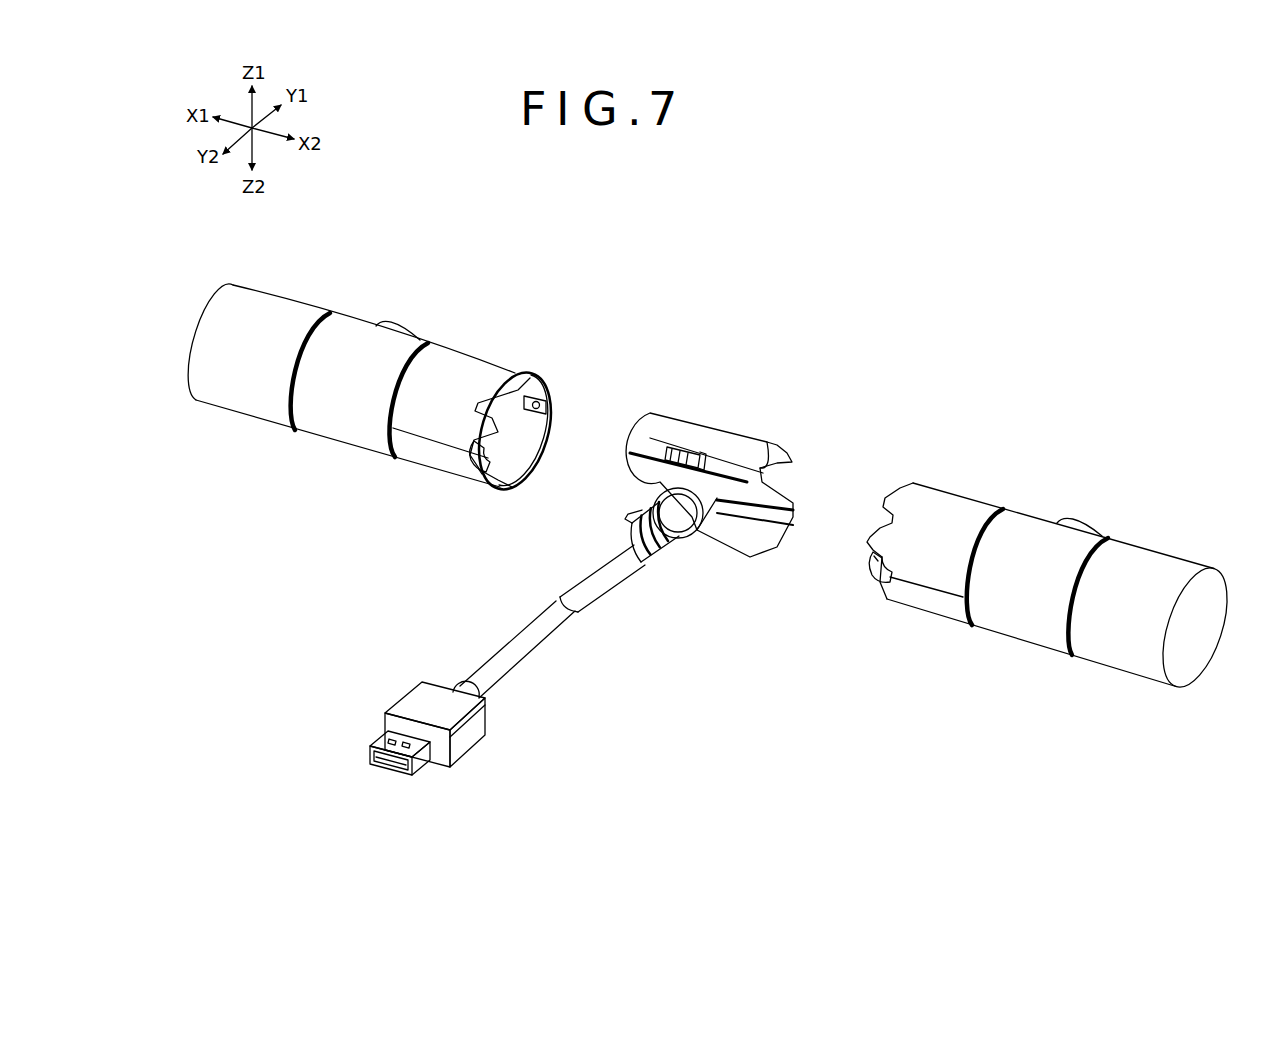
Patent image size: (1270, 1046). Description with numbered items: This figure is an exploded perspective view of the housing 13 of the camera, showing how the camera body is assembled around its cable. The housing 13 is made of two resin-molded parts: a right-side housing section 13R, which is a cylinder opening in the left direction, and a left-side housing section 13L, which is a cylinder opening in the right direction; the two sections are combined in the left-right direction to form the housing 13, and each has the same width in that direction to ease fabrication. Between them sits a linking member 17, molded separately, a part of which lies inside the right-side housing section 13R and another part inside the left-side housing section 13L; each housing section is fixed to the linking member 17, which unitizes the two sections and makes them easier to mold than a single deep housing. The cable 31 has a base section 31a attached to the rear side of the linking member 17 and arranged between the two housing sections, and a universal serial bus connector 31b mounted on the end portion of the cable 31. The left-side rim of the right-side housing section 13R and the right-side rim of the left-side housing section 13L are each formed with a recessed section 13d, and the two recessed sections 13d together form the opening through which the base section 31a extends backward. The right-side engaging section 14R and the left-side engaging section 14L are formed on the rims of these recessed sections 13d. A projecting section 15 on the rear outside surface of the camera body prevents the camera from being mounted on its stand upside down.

The housing 13 is at (796, 349).
The right-side housing section 13R is at (507, 376).
The left-side housing section 13L is at (922, 480).
The recessed section 13d is at (477, 470).
The right-side engaging section 14R is at (466, 455).
The left-side engaging section 14L is at (892, 582).
The projecting section 15 is at (680, 468).
The linking member 17 is at (705, 430).
The cable 31 is at (534, 651).
The base section 31a is at (680, 538).
The connector 31b is at (467, 733).